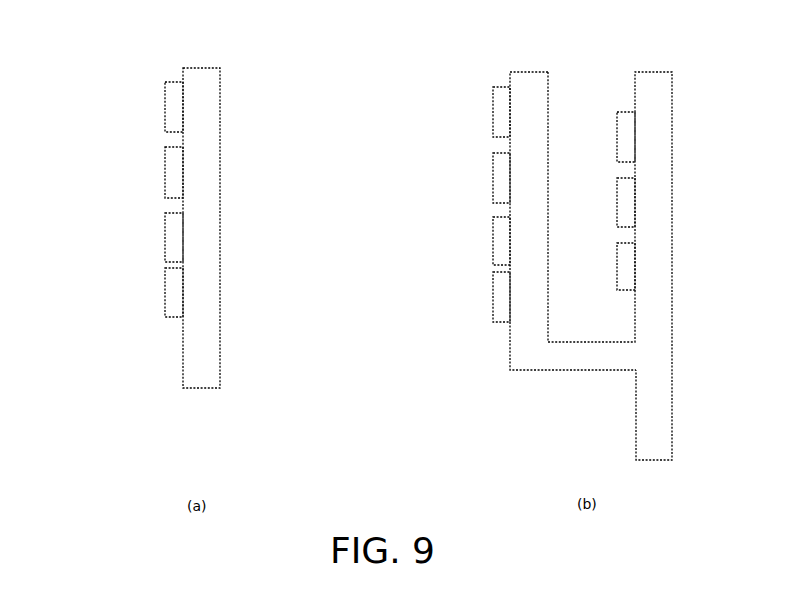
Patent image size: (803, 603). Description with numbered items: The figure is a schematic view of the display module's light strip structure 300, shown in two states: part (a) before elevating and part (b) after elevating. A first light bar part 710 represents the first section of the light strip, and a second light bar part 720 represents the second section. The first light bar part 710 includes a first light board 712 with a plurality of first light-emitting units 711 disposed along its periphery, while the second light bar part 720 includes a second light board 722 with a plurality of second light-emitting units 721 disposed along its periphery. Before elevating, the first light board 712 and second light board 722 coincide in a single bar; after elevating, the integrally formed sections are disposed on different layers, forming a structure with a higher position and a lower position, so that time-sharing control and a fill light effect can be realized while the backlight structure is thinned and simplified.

The touch electrode structure 300 is at (100, 43).
The first light bar part 710 is at (424, 465).
The first light-emitting units 711 is at (165, 173).
The first light board 712 is at (205, 138).
The second light bar part 720 is at (556, 410).
The second light-emitting units 721 is at (163, 107).
The second light board 722 is at (528, 328).